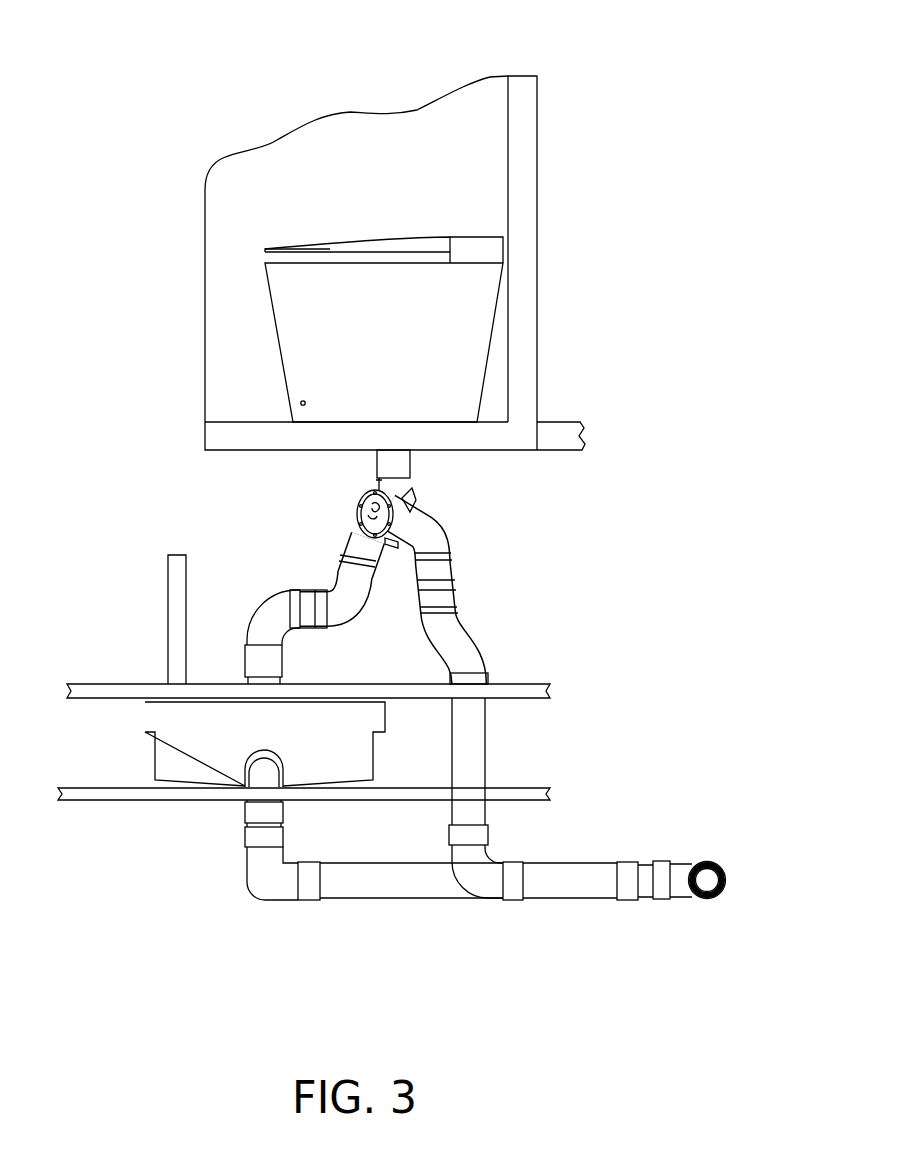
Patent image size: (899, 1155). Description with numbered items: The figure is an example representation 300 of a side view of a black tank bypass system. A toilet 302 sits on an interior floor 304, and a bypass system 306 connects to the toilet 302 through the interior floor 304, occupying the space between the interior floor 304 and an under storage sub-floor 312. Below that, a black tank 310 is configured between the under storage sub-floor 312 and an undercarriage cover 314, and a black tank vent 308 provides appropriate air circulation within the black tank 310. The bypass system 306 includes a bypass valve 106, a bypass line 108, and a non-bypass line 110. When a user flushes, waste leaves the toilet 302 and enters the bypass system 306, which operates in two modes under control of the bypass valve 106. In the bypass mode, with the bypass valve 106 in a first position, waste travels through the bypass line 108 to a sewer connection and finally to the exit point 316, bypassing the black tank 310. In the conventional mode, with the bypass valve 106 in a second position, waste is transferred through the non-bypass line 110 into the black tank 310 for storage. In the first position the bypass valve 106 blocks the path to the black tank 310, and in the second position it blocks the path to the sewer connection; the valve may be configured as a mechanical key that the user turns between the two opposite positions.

The example representation 300 is at (100, 42).
The toilet 302 is at (478, 211).
The interior floor 304 is at (493, 414).
The bypass valve 106 is at (344, 506).
The bypass line 108 is at (449, 523).
The non-bypass line 110 is at (342, 595).
The bypass system 306 is at (524, 560).
The black tank vent 308 is at (157, 609).
The black tank 310 is at (136, 745).
The under storage sub-floor 312 is at (536, 674).
The undercarriage cover 314 is at (529, 779).
The exit point 316 is at (700, 843).